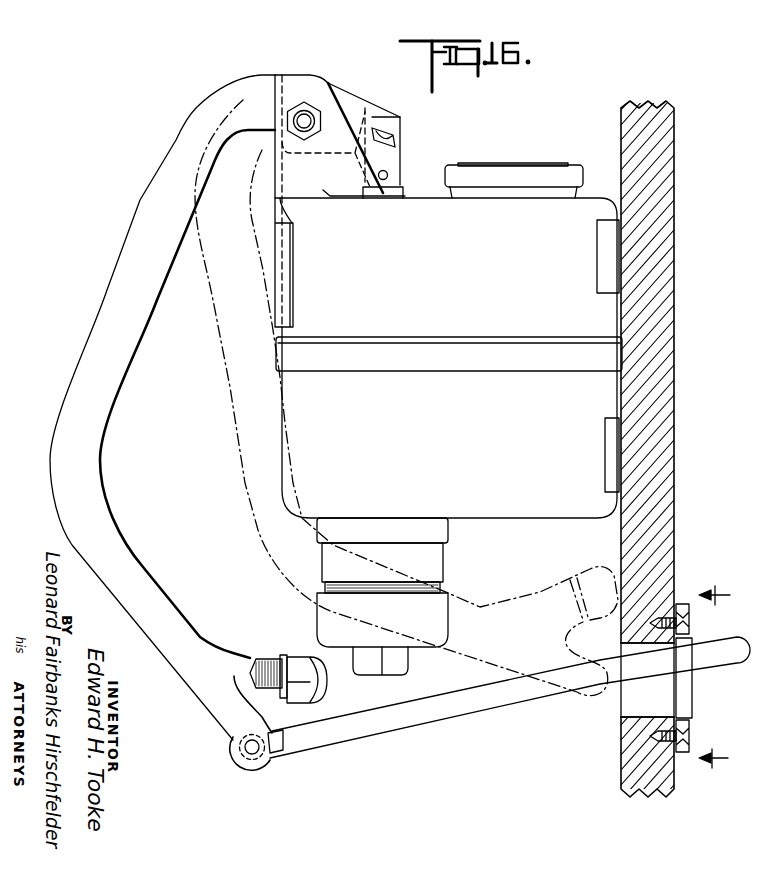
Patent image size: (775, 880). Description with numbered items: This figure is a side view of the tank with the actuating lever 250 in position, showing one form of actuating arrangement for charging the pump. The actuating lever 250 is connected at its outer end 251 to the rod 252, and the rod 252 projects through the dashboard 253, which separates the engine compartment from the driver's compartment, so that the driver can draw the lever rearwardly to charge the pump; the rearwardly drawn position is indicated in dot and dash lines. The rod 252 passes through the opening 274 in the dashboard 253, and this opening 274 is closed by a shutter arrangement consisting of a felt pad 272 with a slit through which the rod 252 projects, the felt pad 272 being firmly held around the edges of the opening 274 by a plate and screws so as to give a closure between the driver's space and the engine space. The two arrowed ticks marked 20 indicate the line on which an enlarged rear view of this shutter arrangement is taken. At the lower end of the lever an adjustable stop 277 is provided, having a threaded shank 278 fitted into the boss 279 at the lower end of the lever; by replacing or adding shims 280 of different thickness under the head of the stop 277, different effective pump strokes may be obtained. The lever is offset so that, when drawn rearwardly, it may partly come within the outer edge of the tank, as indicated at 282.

The section line 20— 20 is at (726, 684).
The actuating lever 250 is at (115, 378).
The outer end of the actuating lever 251 is at (222, 748).
The rod 252 is at (448, 713).
The dashboard 253 is at (662, 524).
The felt pad 272 is at (687, 697).
The opening 274 is at (633, 703).
The adjustable stop 277 is at (312, 687).
The threaded shank 278 is at (271, 657).
The boss 279 is at (241, 659).
The shims 280 is at (283, 700).
The outer edge of the tank 282 is at (290, 503).